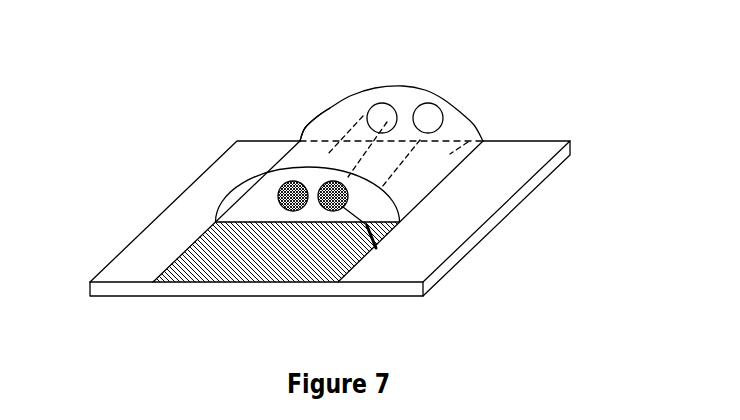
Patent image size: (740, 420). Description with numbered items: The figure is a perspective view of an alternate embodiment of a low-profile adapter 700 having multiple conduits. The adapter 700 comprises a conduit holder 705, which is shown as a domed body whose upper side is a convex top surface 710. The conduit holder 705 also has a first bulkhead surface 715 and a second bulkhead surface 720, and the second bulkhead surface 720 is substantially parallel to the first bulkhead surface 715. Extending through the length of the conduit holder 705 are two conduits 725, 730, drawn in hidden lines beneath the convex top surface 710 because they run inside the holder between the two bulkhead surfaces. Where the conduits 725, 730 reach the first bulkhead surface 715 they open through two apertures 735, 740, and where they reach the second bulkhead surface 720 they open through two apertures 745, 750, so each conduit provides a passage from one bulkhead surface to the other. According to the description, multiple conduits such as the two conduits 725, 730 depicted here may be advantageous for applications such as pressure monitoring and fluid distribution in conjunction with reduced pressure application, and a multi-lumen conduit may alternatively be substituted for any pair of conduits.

The low-profile adapter 700 is at (182, 96).
The conduit holder 705 is at (311, 115).
The convex top surface 710 is at (490, 142).
The first bulkhead surface 715 is at (375, 209).
The second bulkhead surface 720 is at (460, 112).
The conduit 725 is at (332, 153).
The conduit 730 is at (400, 163).
The aperture 735 is at (423, 296).
The aperture 740 is at (289, 201).
The aperture 745 is at (439, 107).
The aperture 750 is at (381, 106).